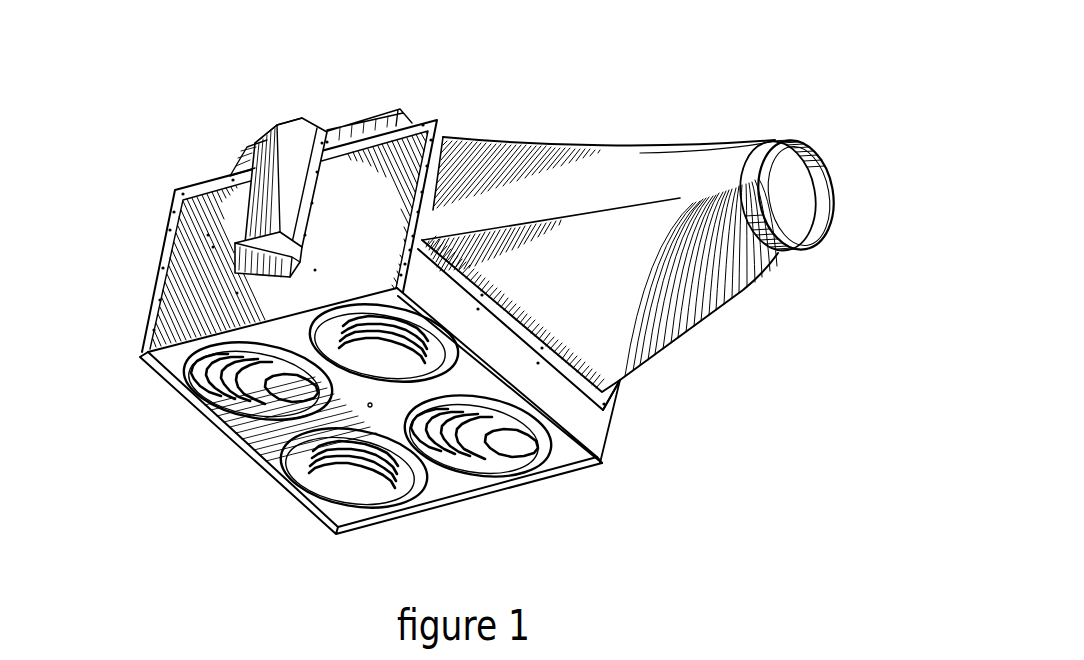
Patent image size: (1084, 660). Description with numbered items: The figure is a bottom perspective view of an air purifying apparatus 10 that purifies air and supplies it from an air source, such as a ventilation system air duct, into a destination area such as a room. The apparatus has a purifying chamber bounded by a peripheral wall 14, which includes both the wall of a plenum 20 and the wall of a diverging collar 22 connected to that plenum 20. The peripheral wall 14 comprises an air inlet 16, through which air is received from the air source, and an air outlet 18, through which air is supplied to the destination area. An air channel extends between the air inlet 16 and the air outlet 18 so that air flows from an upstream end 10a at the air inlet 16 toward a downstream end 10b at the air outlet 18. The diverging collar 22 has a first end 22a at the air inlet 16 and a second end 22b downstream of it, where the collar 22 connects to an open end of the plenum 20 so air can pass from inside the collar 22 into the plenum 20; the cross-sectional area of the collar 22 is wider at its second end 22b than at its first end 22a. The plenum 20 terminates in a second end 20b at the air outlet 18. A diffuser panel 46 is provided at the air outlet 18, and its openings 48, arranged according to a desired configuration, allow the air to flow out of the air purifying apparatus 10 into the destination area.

The air purifying apparatus 10 is at (697, 461).
The upstream end 10a is at (820, 213).
The downstream end 10b is at (240, 407).
The peripheral wall 14 is at (390, 167).
The air inlet 16 is at (800, 158).
The air outlet 18 is at (180, 393).
The plenum 20 is at (190, 250).
The second end 20b is at (268, 408).
The diverging collar 22 is at (547, 177).
The first end 22a is at (777, 143).
The second end 22b is at (453, 140).
The diffuser panel 46 is at (560, 452).
The openings 48 is at (480, 457).